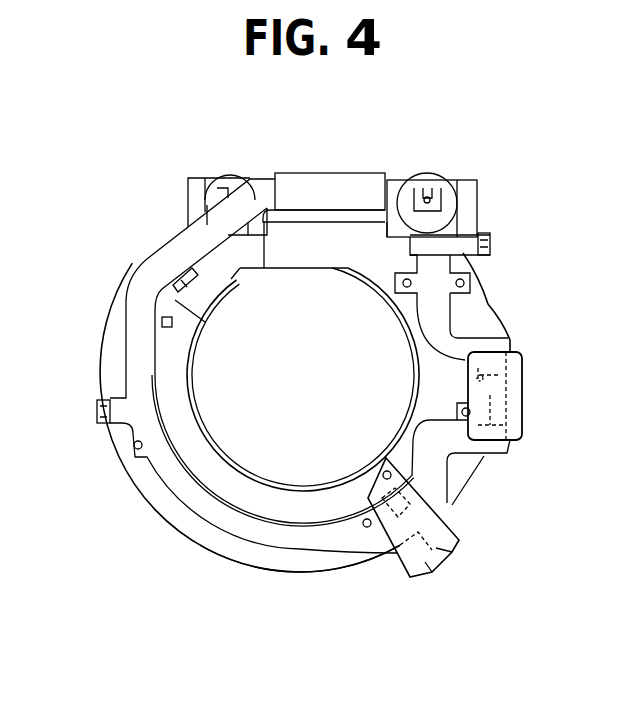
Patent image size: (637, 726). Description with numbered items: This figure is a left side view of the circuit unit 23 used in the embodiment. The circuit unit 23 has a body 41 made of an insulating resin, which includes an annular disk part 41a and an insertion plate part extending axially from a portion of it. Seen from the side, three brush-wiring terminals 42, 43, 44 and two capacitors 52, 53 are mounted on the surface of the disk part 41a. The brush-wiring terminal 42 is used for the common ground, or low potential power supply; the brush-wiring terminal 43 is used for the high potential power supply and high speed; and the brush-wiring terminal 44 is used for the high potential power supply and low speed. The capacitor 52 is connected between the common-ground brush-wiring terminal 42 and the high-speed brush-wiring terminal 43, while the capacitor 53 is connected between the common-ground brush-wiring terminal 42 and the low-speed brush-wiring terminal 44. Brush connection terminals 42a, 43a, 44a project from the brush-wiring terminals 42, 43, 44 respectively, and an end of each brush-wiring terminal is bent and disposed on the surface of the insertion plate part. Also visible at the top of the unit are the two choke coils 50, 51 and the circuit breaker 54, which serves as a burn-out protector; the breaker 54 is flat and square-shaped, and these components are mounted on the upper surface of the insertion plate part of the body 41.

The circuit unit 23 is at (508, 170).
The body 41 is at (494, 308).
The disk part 41a is at (298, 569).
The brush-wiring terminal 42 is at (162, 487).
The brush connection terminal 42a is at (97, 410).
The brush-wiring terminal 43 is at (252, 489).
The brush connection terminal 43a is at (190, 287).
The brush-wiring terminal 44 is at (436, 326).
The brush connection terminal 44a is at (491, 243).
The choke coil 50 is at (228, 176).
The choke coil 51 is at (425, 174).
The capacitor 52 is at (403, 577).
The capacitor 53 is at (523, 398).
The circuit breaker 54 is at (335, 172).